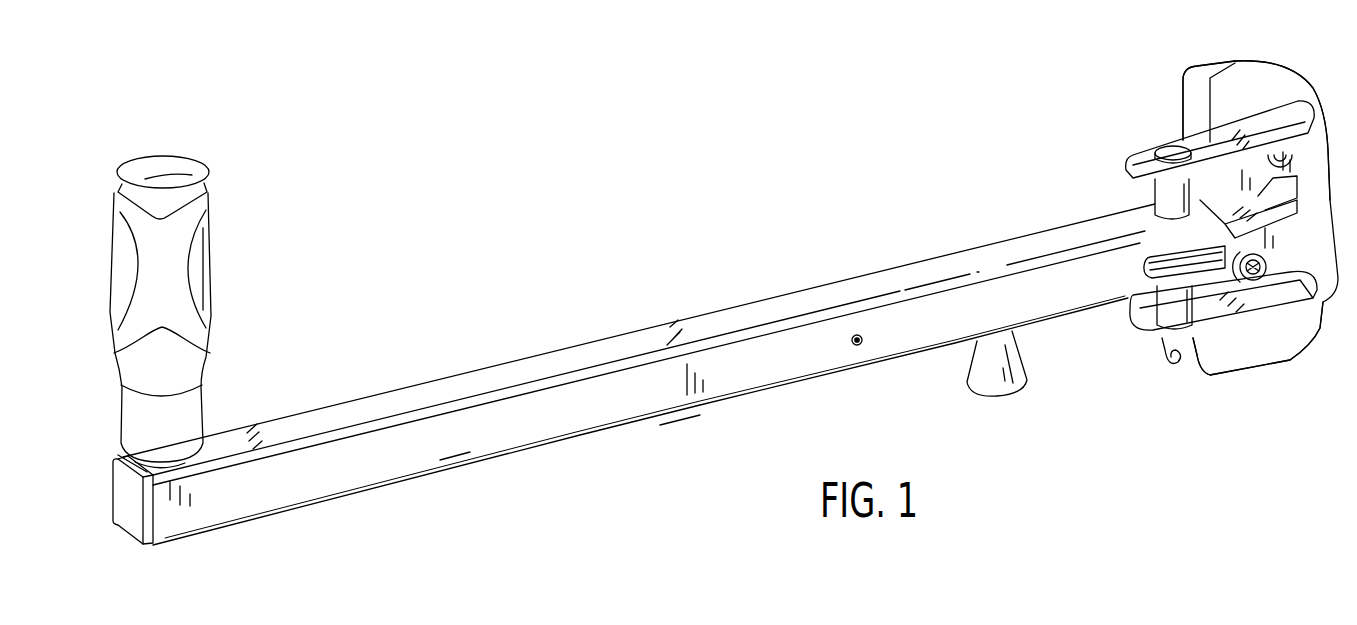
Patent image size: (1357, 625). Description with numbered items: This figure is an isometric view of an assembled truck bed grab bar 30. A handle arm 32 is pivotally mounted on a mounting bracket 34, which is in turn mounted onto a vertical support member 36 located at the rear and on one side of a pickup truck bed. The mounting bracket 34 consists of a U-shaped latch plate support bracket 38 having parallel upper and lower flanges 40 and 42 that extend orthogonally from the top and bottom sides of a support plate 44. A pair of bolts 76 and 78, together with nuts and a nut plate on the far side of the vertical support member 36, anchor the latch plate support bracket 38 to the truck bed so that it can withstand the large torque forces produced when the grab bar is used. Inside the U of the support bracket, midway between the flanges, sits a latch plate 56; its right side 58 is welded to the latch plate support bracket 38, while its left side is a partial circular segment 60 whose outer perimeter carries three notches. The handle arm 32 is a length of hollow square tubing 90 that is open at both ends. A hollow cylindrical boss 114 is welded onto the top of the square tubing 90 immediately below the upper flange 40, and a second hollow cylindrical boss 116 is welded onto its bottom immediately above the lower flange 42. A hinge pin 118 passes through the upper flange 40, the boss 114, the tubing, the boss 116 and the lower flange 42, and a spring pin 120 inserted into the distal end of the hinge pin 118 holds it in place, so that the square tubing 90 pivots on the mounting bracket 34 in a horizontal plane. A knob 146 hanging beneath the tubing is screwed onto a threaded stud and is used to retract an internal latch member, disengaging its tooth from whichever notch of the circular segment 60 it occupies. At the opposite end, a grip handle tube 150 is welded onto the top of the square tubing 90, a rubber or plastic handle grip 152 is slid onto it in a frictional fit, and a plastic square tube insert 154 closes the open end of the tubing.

The truck bed grab bar 30 is at (678, 486).
The handle arm 32 is at (763, 296).
The mounting bracket 34 is at (1320, 302).
The vertical support member 36 is at (1220, 97).
The latch plate support bracket 38 is at (1247, 320).
The upper flange 40 is at (1287, 110).
The lower flange 42 is at (1272, 292).
The support plate 44 is at (1329, 118).
The latch plate 56 is at (1272, 220).
The right side of the latch plate 58 is at (1267, 198).
The circular segment 60 is at (1170, 267).
The bolt 76 is at (1262, 158).
The bolt 78 is at (1260, 297).
The square tubing 90 is at (450, 445).
The hollow cylindrical boss 114 is at (1170, 203).
The hollow cylindrical boss 116 is at (1162, 315).
The hinge pin 118 is at (1170, 148).
The spring pin 120 is at (1170, 372).
The knob 146 is at (995, 390).
The grip handle tube 150 is at (170, 472).
The handle grip 152 is at (210, 275).
The square tube insert 154 is at (135, 530).